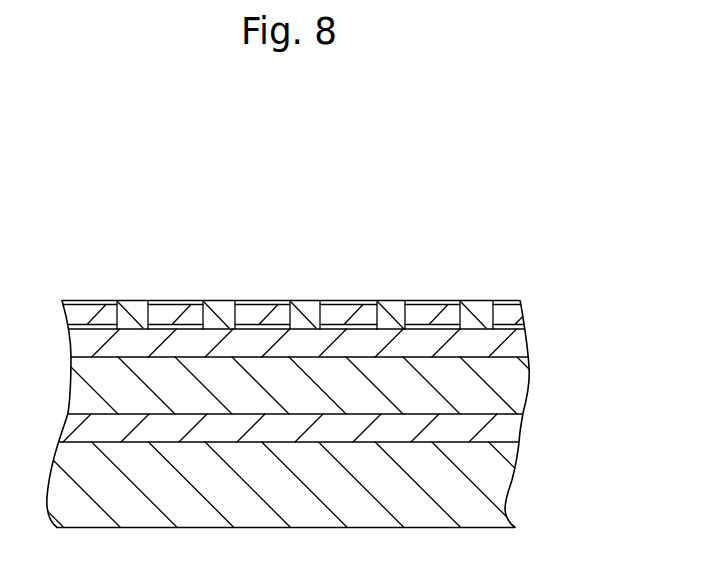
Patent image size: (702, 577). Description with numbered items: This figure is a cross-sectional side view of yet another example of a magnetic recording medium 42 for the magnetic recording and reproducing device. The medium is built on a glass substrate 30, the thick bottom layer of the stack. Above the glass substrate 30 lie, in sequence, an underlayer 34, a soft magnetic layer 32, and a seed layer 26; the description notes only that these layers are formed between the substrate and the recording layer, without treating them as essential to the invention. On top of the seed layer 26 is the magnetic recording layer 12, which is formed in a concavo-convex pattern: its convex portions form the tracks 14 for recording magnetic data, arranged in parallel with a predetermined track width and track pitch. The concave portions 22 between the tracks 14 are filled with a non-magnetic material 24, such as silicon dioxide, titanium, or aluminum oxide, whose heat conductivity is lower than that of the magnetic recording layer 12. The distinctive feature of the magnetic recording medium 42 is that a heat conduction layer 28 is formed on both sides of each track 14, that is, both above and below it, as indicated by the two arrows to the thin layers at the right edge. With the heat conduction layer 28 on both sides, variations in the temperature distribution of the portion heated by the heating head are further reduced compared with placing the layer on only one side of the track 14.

The magnetic recording medium 42 is at (298, 186).
The magnetic recording layer 12 is at (527, 317).
The track 14 is at (333, 315).
The concave portion 22 is at (395, 312).
The non-magnetic material 24 is at (395, 330).
The seed layer 26 is at (532, 352).
The heat conduction layer 28 is at (525, 302).
The glass substrate 30 is at (508, 480).
The soft magnetic layer 32 is at (532, 392).
The underlayer 34 is at (520, 432).